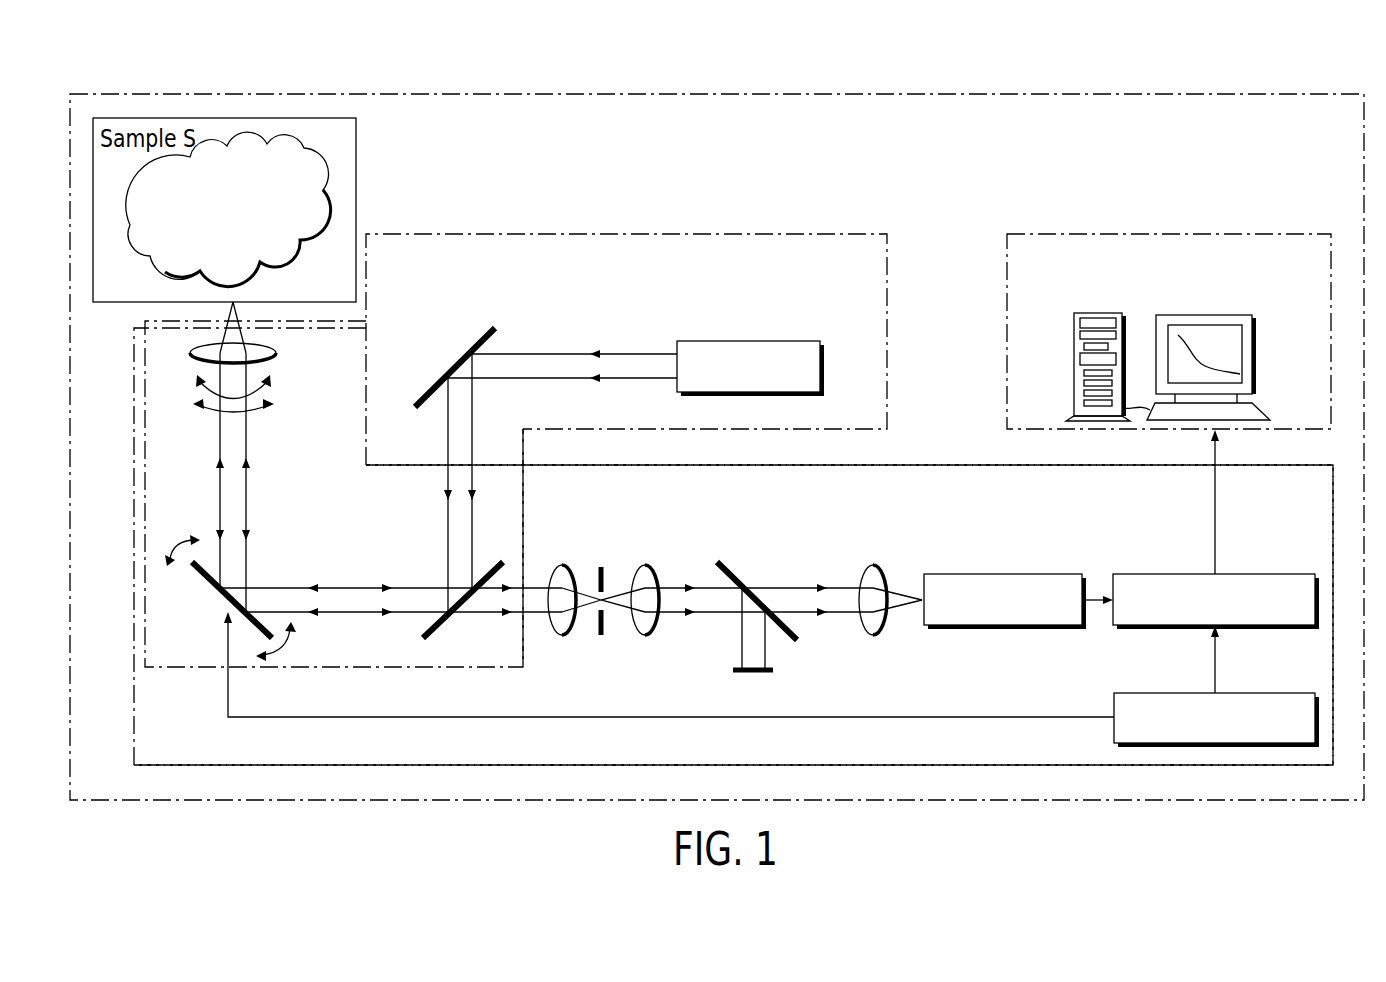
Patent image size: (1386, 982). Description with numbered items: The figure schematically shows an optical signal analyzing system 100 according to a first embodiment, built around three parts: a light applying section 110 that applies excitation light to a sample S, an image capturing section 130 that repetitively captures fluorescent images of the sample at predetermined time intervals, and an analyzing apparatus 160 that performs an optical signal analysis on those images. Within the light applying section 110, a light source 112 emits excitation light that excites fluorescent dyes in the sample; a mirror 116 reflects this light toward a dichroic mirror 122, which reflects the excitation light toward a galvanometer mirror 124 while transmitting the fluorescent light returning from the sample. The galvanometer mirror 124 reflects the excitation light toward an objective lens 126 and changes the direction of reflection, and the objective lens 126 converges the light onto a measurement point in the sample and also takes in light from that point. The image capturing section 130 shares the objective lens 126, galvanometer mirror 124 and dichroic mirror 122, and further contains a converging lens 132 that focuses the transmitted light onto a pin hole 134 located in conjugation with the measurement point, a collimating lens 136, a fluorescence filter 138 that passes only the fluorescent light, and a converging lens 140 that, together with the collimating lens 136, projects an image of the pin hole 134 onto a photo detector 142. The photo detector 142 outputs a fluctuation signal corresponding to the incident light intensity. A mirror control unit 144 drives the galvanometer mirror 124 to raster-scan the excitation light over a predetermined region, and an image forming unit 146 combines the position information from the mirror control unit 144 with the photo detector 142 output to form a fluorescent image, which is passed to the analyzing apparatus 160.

The optical signal analyzing system 100 is at (1207, 92).
The light applying section 110 is at (810, 232).
The light source 112 is at (783, 339).
The mirror 116 is at (438, 380).
The dichroic mirror 122 is at (450, 612).
The galvanometer mirror 124 is at (205, 585).
The objective lens 126 is at (277, 351).
The image capturing section 130 is at (933, 465).
The converging lens 132 is at (556, 568).
The pin hole 134 is at (600, 638).
The collimating lens 136 is at (643, 566).
The fluorescence filter 138 is at (735, 568).
The converging lens 140 is at (877, 566).
The photo detector 142 is at (1045, 573).
The mirror control unit 144 is at (1258, 692).
The image forming unit 146 is at (1258, 573).
The analyzing apparatus 160 is at (1245, 232).